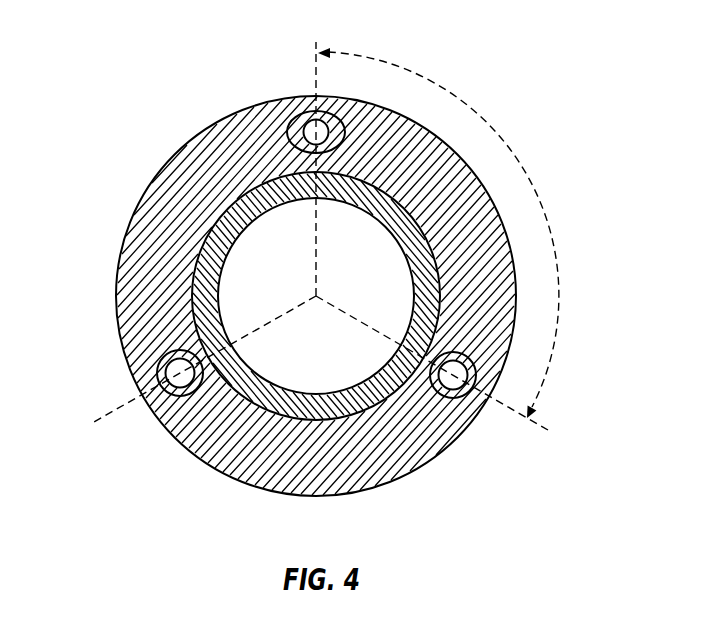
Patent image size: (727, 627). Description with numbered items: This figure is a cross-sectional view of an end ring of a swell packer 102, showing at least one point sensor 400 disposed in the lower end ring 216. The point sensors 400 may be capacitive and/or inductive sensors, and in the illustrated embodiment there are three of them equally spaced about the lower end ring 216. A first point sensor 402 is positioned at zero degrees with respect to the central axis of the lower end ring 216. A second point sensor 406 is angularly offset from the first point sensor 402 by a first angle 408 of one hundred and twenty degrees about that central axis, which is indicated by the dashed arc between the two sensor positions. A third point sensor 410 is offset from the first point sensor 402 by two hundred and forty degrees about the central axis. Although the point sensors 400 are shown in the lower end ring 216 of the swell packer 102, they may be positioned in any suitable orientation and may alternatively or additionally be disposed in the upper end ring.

The swell packer 102 is at (500, 48).
The lower end ring 216 is at (128, 260).
The point sensor 400 is at (318, 120).
The first point sensor 402 is at (290, 137).
The second point sensor 406 is at (437, 387).
The first angle 408 is at (535, 190).
The third point sensor 410 is at (162, 362).